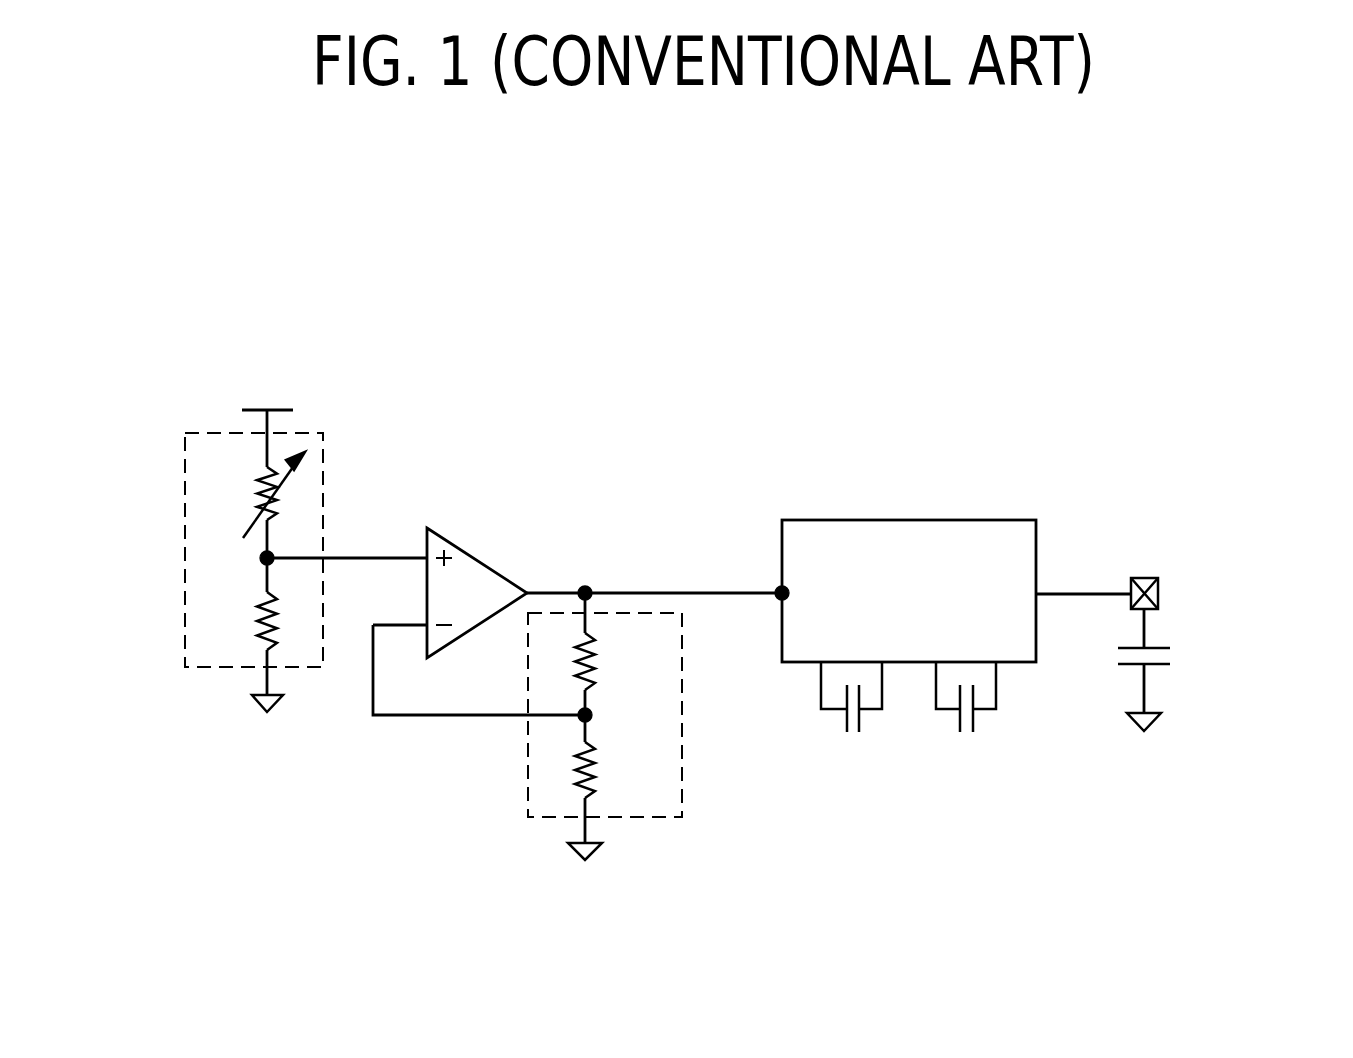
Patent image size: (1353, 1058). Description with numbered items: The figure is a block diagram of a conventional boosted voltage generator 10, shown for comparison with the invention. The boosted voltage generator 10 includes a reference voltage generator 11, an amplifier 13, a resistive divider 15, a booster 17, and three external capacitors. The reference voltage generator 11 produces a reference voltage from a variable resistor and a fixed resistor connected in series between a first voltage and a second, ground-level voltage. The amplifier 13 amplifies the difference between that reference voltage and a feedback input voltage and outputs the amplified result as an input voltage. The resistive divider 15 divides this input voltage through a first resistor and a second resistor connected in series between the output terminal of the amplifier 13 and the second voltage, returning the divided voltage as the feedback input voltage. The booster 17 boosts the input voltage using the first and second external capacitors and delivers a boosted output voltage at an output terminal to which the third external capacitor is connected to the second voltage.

The boosted voltage generator 10 is at (1104, 402).
The reference voltage generator 11 is at (323, 453).
The amplifier 13 is at (480, 558).
The resistive divider 15 is at (682, 745).
The booster 17 is at (987, 518).